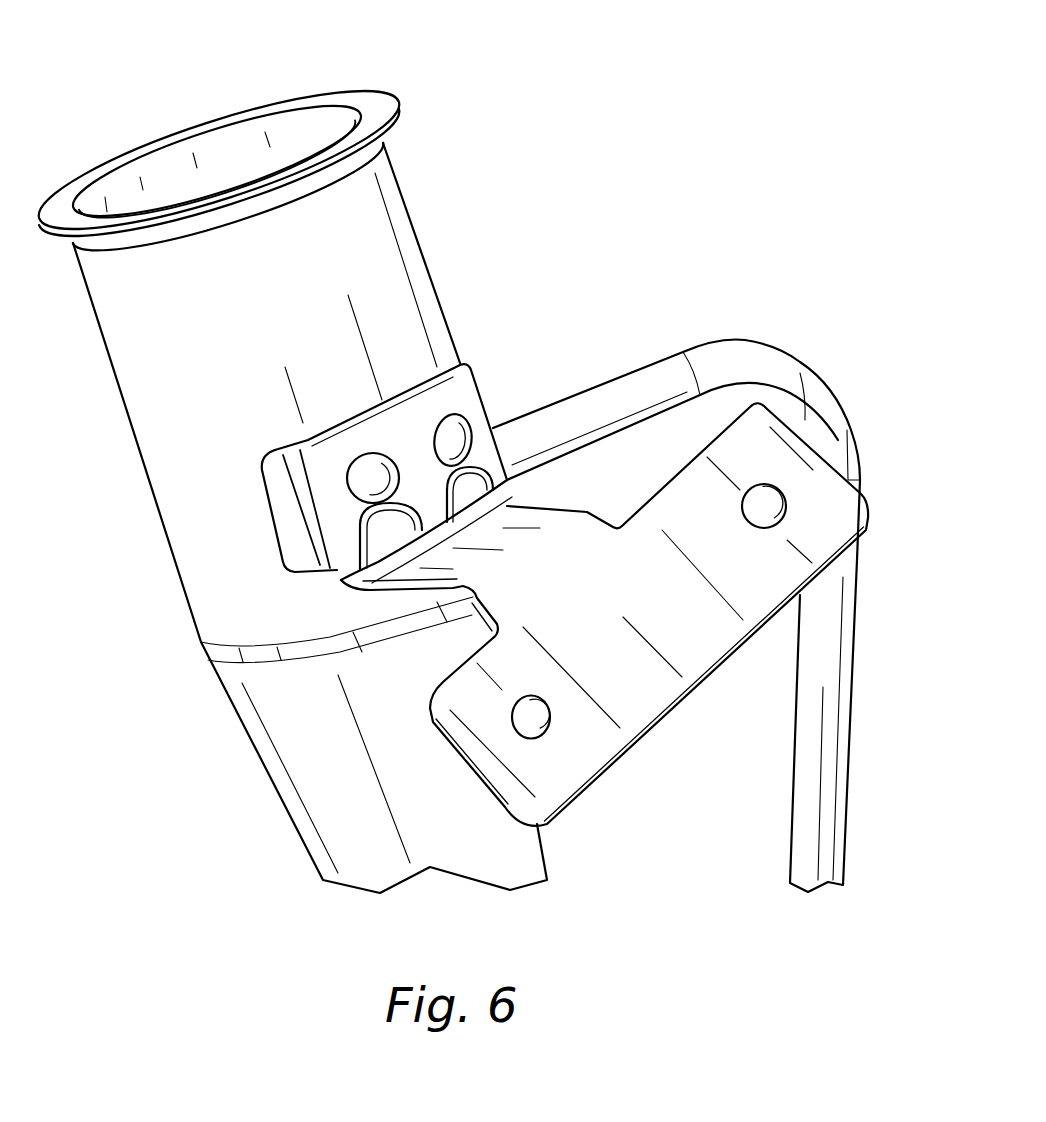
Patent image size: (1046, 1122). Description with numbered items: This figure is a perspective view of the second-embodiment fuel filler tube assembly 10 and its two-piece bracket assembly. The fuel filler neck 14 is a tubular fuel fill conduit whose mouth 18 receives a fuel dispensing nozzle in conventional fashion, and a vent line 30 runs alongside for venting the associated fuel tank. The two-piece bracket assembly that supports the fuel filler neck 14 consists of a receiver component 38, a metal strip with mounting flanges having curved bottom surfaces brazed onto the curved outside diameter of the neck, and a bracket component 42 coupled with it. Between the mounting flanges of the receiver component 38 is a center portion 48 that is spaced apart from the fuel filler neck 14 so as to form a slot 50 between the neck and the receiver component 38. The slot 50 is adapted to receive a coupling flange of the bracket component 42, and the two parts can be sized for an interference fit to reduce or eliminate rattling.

The fuel filler tube assembly 10 is at (667, 96).
The fuel filler neck 14 is at (372, 242).
The mouth 18 is at (222, 130).
The vent line 30 is at (812, 368).
The receiver component 38 is at (417, 394).
The bracket component 42 is at (700, 730).
The center portion 48 is at (280, 507).
The slot 50 is at (285, 422).